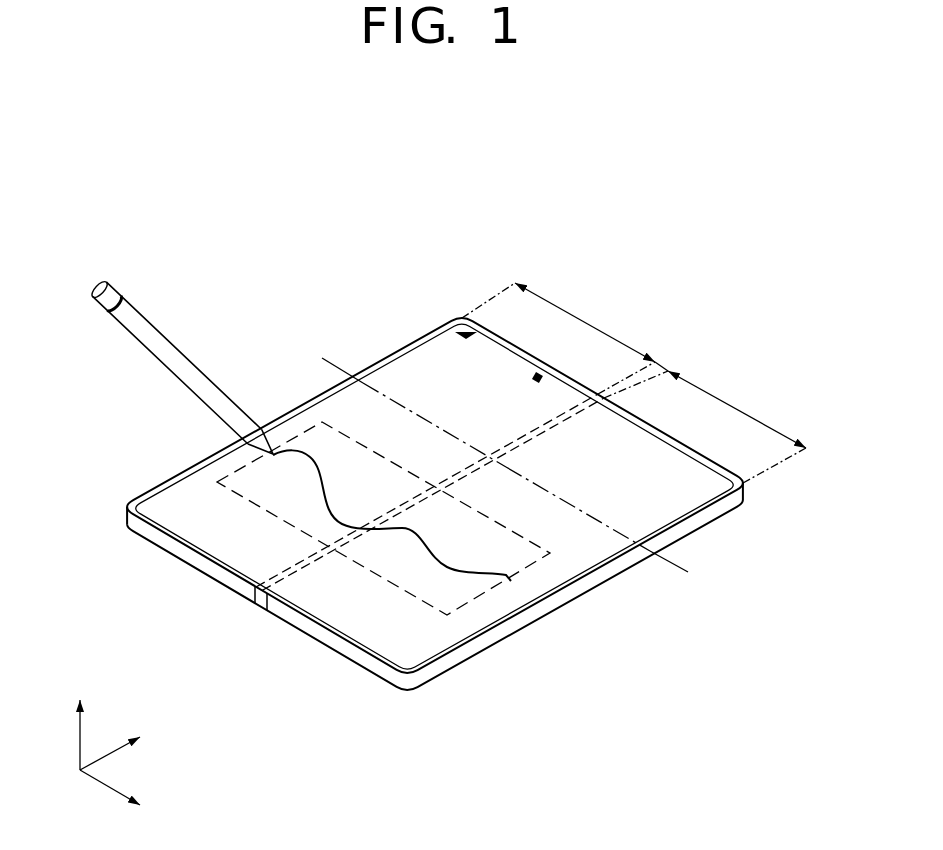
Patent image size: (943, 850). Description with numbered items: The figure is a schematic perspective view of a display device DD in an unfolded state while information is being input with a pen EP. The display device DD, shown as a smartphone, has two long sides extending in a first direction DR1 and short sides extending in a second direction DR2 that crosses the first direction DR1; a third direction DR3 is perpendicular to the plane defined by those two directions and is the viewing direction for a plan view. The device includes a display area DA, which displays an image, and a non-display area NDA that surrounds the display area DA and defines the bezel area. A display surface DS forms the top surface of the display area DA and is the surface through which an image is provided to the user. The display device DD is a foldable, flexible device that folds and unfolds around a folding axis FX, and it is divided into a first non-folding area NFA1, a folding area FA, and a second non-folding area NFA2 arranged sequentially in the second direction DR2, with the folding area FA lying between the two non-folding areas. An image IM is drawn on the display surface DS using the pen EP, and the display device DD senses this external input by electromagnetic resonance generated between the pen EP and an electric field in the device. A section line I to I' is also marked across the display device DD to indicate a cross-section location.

The display device DD is at (692, 225).
The pen EP is at (96, 284).
The first non-folding area NFA1 is at (558, 322).
The second non-folding area NFA2 is at (737, 427).
The folding area FA is at (645, 369).
The folding axis FX is at (254, 602).
The display surface DS is at (554, 578).
The display area DA is at (467, 622).
The non-display area NDA is at (437, 661).
The image IM is at (493, 590).
The section line I is at (390, 412).
The section line I' is at (597, 539).
The first direction DR1 is at (130, 744).
The second direction DR2 is at (131, 797).
The third direction DR3 is at (80, 721).